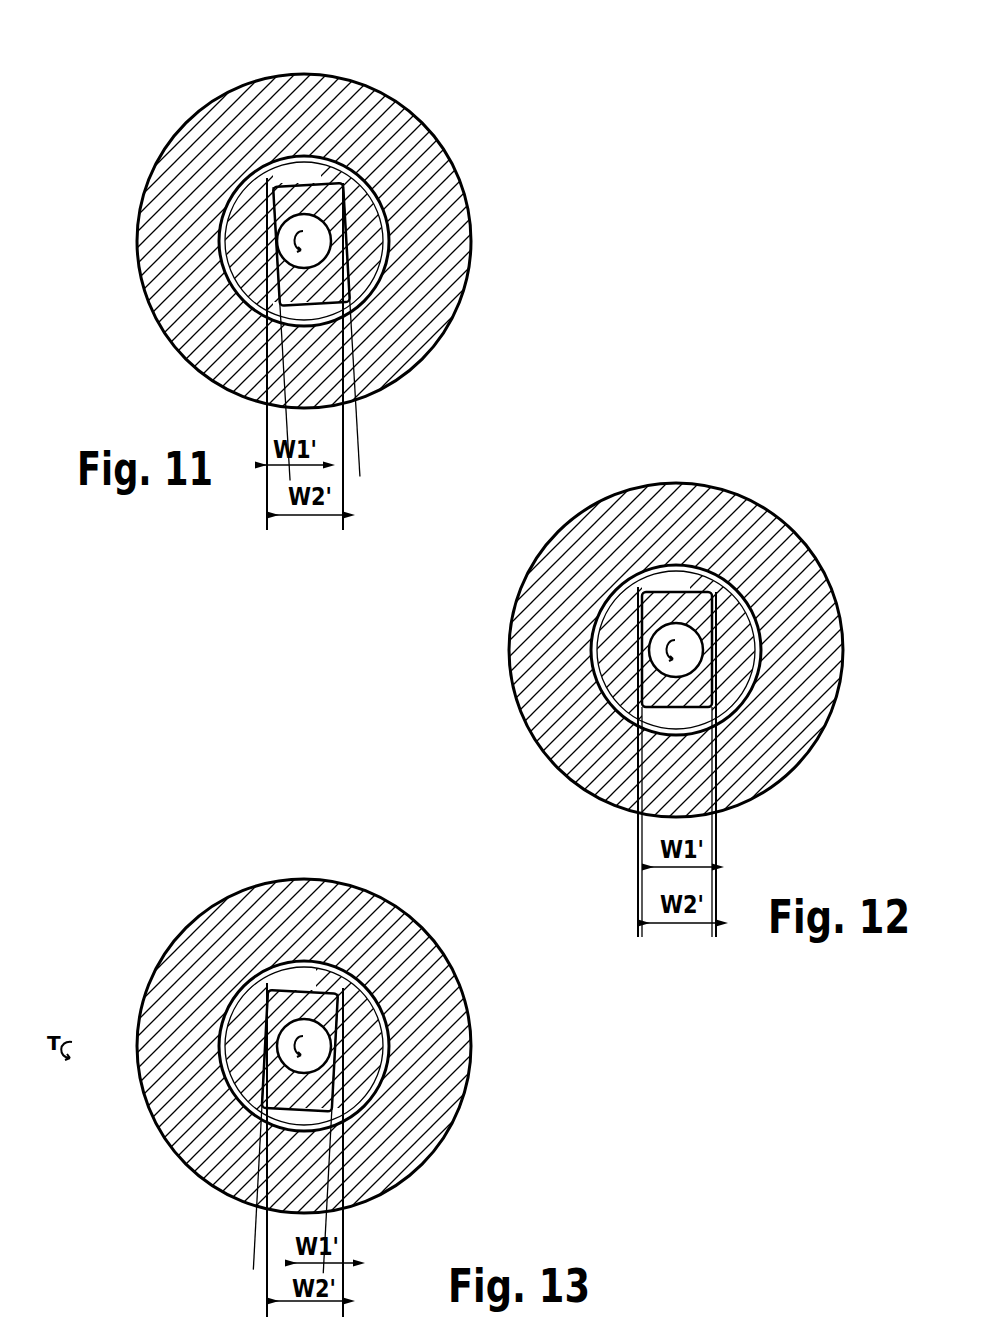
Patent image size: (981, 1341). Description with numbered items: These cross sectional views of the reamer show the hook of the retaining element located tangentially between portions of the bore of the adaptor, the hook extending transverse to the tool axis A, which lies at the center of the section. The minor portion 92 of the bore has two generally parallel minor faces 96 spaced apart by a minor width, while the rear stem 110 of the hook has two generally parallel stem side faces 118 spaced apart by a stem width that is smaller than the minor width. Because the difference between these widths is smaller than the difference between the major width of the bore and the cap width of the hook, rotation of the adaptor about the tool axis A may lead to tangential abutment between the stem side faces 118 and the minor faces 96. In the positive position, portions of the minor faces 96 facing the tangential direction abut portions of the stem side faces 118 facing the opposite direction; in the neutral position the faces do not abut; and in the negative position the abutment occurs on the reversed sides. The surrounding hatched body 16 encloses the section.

In FIG. 11, the roller body 16 is at (282, 241).
In FIG. 12, the roller body 16 is at (655, 650).
In FIG. 13, the roller body 16 is at (283, 1046).
In FIG. 11, the minor portion 92 is at (253, 205).
In FIG. 12, the minor portion 92 is at (626, 611).
In FIG. 13, the minor portion 92 is at (254, 1010).
In FIG. 11, the minor faces 96 is at (257, 285).
In FIG. 12, the minor faces 96 is at (627, 693).
In FIG. 13, the minor faces 96 is at (254, 1082).
In FIG. 11, the rear stem 110 is at (316, 158).
In FIG. 12, the rear stem 110 is at (687, 563).
In FIG. 13, the rear stem 110 is at (311, 964).
In FIG. 11, the stem side faces 118 is at (262, 296).
In FIG. 12, the stem side faces 118 is at (669, 650).
In FIG. 13, the stem side faces 118 is at (301, 1033).
In FIG. 11, the tool axis A is at (404, 241).
In FIG. 12, the tool axis A is at (771, 668).
In FIG. 13, the tool axis A is at (400, 1071).